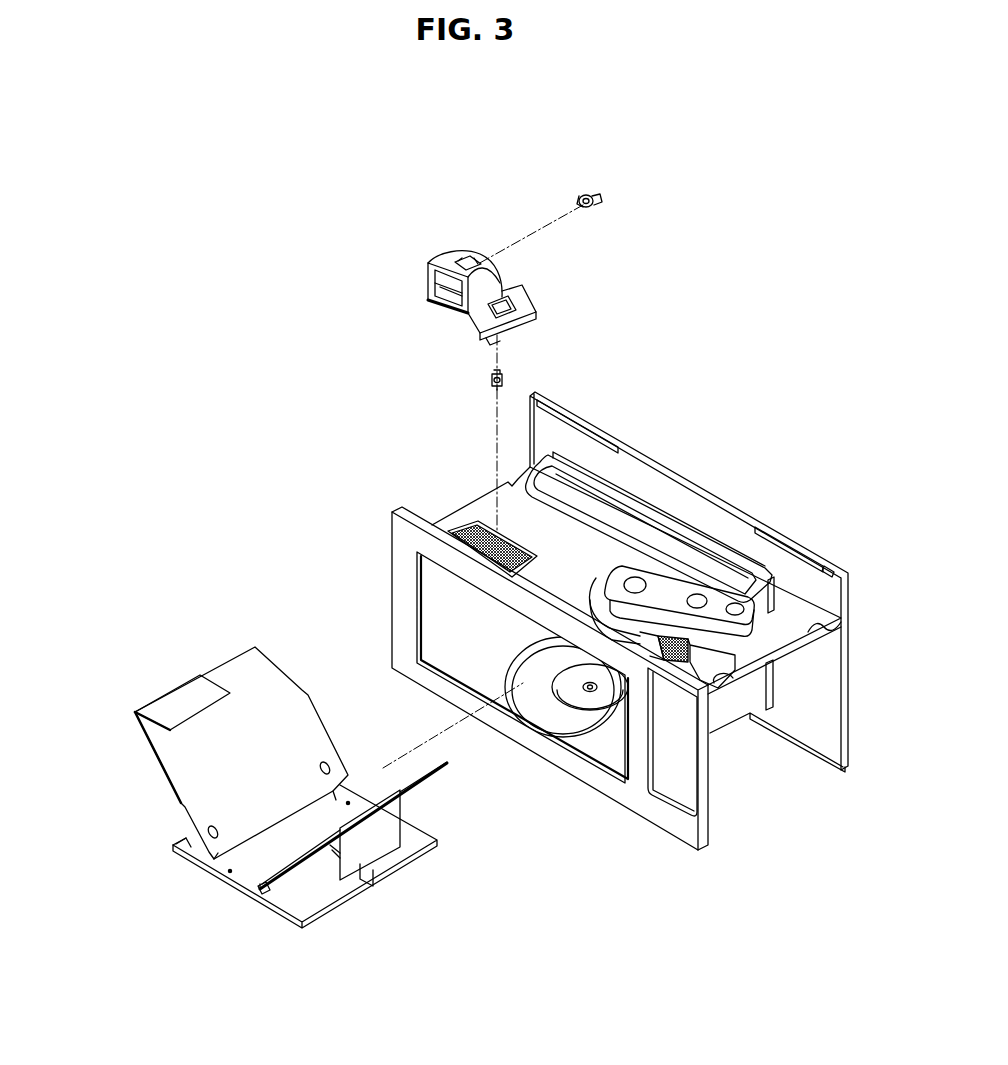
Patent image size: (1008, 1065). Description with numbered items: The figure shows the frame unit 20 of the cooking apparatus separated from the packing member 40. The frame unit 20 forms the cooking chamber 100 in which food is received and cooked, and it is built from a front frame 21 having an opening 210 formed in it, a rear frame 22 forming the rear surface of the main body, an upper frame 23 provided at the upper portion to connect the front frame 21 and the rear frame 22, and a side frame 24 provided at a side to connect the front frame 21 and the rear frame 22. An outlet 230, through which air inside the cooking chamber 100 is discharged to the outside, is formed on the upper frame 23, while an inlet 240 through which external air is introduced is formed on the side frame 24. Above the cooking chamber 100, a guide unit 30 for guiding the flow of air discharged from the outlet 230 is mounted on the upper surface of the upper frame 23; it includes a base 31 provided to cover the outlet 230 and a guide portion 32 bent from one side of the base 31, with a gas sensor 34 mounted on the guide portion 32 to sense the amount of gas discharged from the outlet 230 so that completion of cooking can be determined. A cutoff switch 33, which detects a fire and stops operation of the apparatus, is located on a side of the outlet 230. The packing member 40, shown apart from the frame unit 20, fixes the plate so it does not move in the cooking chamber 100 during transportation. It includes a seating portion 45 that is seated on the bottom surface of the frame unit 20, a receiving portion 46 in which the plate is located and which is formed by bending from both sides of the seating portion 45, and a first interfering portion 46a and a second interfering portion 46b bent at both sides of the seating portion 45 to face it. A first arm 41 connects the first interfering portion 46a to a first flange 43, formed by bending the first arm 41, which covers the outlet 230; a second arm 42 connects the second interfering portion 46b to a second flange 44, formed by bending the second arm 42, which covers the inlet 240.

The frame unit 20 is at (476, 482).
The front frame 21 is at (392, 578).
The opening 210 is at (416, 612).
The rear frame 22 is at (716, 508).
The upper frame 23 is at (608, 548).
The outlet 230 is at (468, 525).
The side frame 24 is at (705, 667).
The inlet 240 is at (672, 668).
The guide unit 30 is at (430, 252).
The base 31 is at (517, 312).
The guide portion 32 is at (493, 288).
The cutoff switch 33 is at (490, 380).
The gas sensor 34 is at (585, 192).
The packing member 40 is at (138, 688).
The first arm 41 is at (180, 762).
The second arm 42 is at (313, 855).
The first flange 43 is at (178, 704).
The second flange 44 is at (378, 843).
The seating portion 45 is at (215, 868).
The receiving portion 46 is at (266, 863).
The first interfering portion 46a is at (187, 843).
The second interfering portion 46b is at (300, 900).
The cooking chamber 100 is at (498, 652).